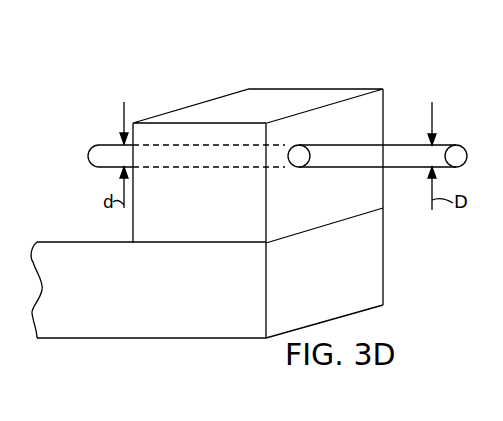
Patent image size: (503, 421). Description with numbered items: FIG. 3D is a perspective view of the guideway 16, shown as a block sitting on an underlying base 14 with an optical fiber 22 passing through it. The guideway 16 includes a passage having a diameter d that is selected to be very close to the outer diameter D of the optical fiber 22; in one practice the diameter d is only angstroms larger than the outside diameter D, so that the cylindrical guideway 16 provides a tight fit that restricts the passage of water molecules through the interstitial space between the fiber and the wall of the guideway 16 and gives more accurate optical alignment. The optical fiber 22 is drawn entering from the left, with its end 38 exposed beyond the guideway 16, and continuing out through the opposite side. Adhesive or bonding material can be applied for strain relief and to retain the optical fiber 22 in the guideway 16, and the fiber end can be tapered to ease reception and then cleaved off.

The substrate 14 is at (155, 308).
The guideway 16 is at (190, 128).
The optical fiber 22 is at (96, 166).
The end of the optical fiber 38 is at (95, 151).